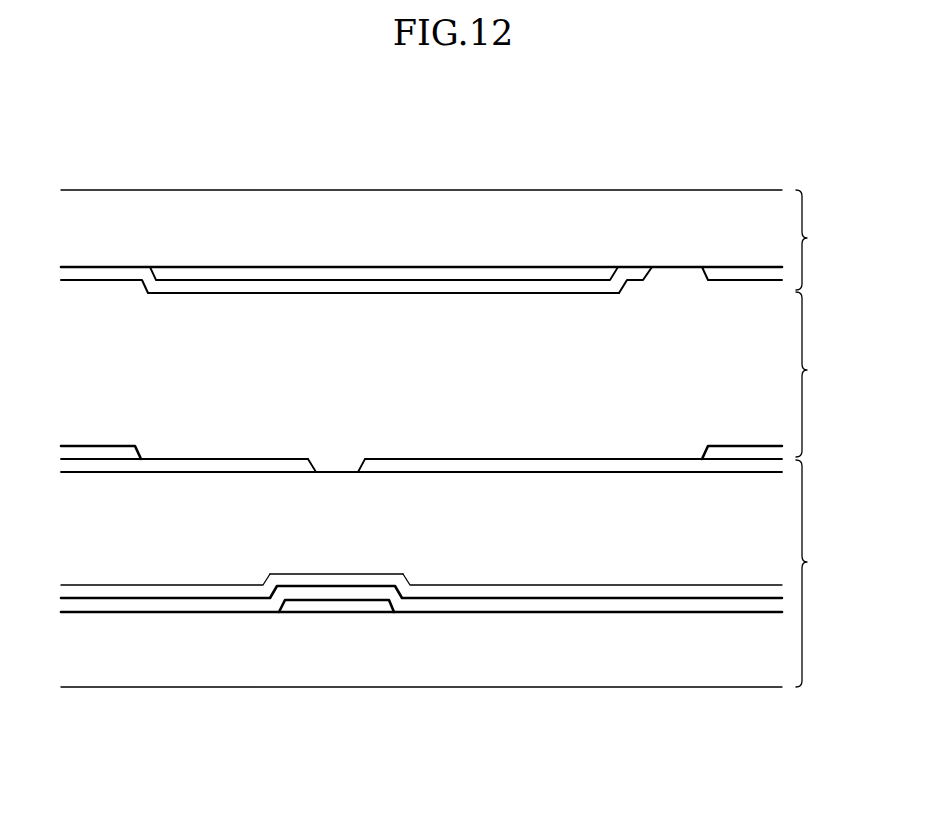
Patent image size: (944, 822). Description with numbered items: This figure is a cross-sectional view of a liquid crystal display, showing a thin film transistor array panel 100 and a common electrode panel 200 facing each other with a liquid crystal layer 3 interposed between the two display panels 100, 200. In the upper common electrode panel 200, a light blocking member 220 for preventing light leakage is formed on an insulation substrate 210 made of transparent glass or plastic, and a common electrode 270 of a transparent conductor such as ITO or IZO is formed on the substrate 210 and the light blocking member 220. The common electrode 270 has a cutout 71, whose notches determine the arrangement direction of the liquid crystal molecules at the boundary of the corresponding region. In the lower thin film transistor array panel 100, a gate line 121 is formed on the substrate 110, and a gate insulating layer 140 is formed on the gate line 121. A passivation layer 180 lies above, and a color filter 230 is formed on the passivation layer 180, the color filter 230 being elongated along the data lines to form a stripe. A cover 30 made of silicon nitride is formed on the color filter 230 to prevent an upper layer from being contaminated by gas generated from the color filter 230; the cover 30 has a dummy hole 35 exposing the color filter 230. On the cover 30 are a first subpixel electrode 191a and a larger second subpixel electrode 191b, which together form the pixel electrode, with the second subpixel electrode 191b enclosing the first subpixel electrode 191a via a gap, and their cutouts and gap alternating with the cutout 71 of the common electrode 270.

The liquid crystal layer 3 is at (810, 374).
The cover 30 is at (525, 468).
The dummy hole 35 is at (360, 470).
The cutout 71 is at (652, 272).
The thin film transistor array panel 100 is at (824, 573).
The substrate 110 is at (222, 665).
The gate line 121 is at (330, 605).
The gate insulating layer 140 is at (430, 608).
The passivation layer 180 is at (668, 592).
The first subpixel electrode 191a is at (104, 455).
The second subpixel electrode 191b is at (743, 455).
The common electrode panel 200 is at (824, 240).
The insulation substrate 210 is at (555, 212).
The light blocking member 220 is at (374, 275).
The color filter 230 is at (560, 560).
The common electrode 270 is at (220, 287).